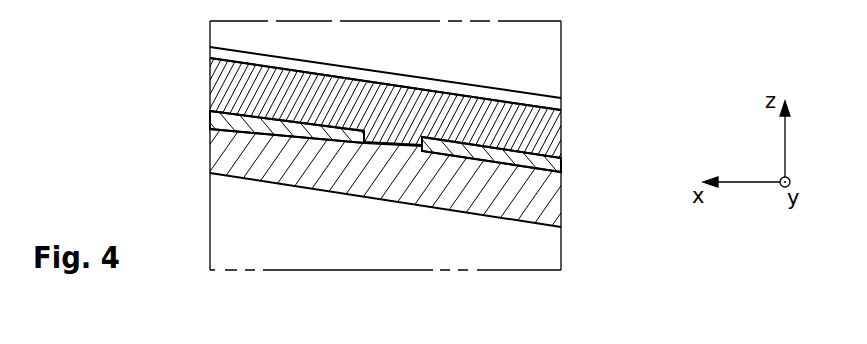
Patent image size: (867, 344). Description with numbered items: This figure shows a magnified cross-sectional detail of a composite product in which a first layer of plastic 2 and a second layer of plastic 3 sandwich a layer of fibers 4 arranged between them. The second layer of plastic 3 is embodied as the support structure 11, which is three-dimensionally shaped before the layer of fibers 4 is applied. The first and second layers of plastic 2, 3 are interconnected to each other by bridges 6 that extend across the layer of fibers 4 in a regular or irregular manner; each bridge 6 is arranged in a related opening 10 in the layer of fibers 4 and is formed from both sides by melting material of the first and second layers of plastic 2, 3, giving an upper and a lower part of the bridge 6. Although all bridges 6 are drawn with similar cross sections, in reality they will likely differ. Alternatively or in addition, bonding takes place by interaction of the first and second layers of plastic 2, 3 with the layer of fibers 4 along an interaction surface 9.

The first layer of plastic 2 is at (243, 151).
The second layer of plastic 3 is at (243, 89).
The support structure 11 is at (243, 89).
The layer of fibers 4 is at (232, 118).
The interaction surface 9 is at (498, 149).
The bridge 6 is at (402, 129).
The opening 10 is at (424, 129).